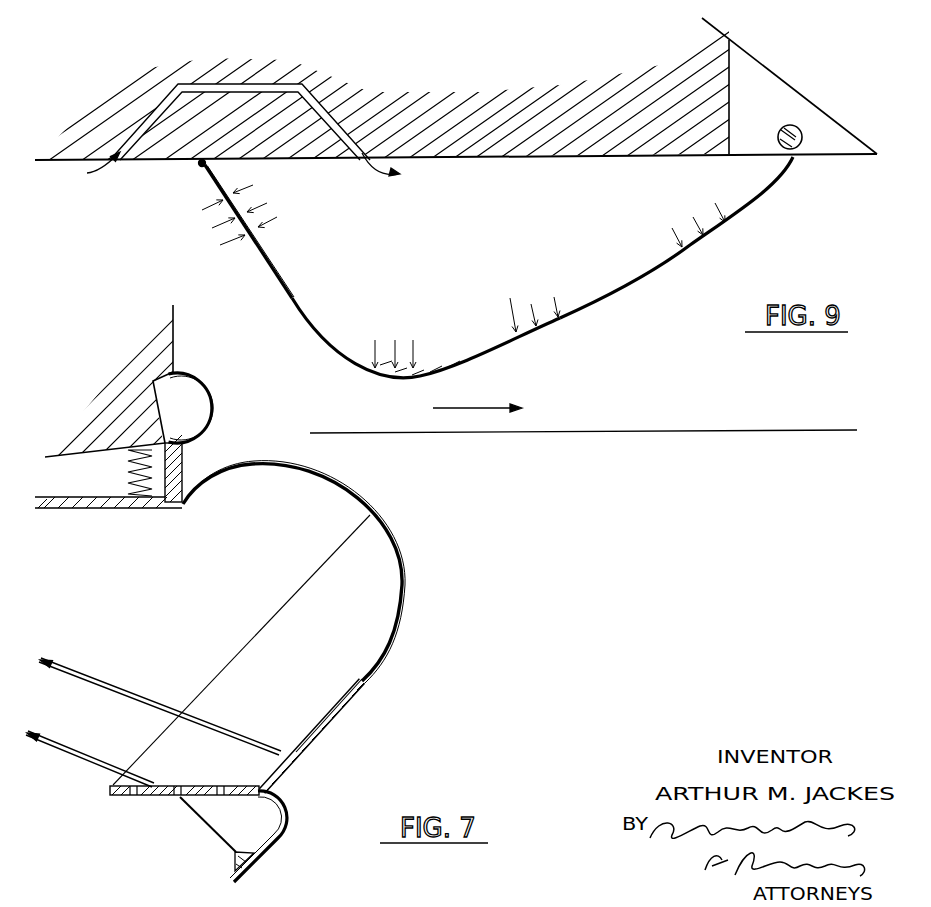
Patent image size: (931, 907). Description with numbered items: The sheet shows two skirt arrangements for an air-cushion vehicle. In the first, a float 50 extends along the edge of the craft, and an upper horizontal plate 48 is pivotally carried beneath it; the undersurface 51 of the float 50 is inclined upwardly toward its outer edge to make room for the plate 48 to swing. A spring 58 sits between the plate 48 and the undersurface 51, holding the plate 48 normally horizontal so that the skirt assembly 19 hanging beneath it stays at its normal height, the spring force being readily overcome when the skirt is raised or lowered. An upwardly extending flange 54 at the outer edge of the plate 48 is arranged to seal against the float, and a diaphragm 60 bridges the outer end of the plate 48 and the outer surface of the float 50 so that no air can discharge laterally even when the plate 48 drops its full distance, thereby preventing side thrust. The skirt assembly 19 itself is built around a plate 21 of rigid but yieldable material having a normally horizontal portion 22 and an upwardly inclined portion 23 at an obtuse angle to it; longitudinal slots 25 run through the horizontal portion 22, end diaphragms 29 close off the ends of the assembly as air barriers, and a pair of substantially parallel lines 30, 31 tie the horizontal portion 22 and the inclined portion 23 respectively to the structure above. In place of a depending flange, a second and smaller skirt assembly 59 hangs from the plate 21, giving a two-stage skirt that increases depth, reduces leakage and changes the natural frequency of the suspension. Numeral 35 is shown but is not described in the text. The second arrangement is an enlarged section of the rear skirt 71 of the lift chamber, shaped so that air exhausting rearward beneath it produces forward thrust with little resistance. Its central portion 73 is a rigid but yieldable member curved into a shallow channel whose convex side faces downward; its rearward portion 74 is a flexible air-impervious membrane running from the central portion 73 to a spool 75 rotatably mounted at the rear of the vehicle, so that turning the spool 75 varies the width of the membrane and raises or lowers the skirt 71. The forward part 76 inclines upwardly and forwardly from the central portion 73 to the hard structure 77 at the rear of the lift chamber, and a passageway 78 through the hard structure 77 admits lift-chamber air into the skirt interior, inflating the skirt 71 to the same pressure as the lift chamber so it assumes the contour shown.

In FIG. 7, the skirt assembly 19 is at (412, 560).
In FIG. 7, the plate 21 is at (348, 732).
In FIG. 7, the horizontal portion 22 is at (200, 785).
In FIG. 7, the inclined portion 23 is at (338, 703).
In FIG. 7, the slots 25 is at (176, 796).
In FIG. 7, the end diaphragms 29 is at (290, 618).
In FIG. 7, the line 30 is at (60, 745).
In FIG. 7, the line 31 is at (78, 672).
In FIG. 7, the ball socket 35 is at (152, 400).
In FIG. 7, the upper horizontal plate 48 is at (88, 508).
In FIG. 7, the float 50 is at (168, 333).
In FIG. 7, the undersurface of the float 51 is at (70, 455).
In FIG. 7, the upwardly extending flange 54 is at (182, 468).
In FIG. 7, the spring 58 is at (128, 480).
In FIG. 7, the second skirt assembly 59 is at (294, 812).
In FIG. 7, the diaphragm 60 is at (212, 407).
In FIG. 9, the skirt 71 is at (496, 267).
In FIG. 9, the central portion 73 is at (428, 362).
In FIG. 9, the rearward portion 74 is at (676, 258).
In FIG. 9, the spool 75 is at (782, 130).
In FIG. 9, the forward part 76 is at (272, 258).
In FIG. 9, the hard structure 77 is at (162, 160).
In FIG. 9, the passageway 78 is at (278, 85).